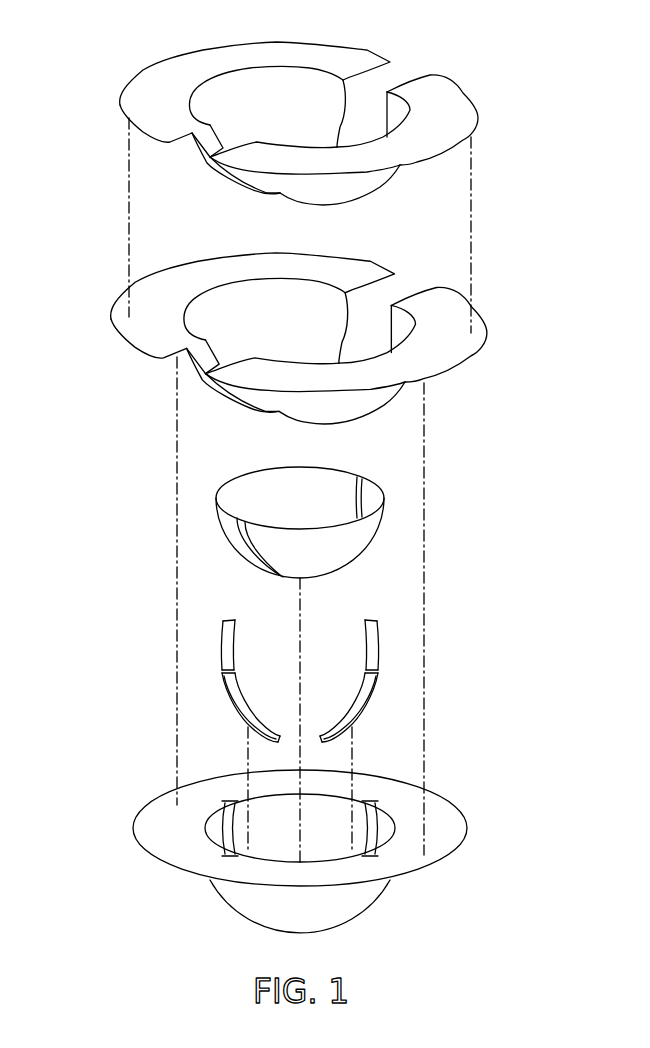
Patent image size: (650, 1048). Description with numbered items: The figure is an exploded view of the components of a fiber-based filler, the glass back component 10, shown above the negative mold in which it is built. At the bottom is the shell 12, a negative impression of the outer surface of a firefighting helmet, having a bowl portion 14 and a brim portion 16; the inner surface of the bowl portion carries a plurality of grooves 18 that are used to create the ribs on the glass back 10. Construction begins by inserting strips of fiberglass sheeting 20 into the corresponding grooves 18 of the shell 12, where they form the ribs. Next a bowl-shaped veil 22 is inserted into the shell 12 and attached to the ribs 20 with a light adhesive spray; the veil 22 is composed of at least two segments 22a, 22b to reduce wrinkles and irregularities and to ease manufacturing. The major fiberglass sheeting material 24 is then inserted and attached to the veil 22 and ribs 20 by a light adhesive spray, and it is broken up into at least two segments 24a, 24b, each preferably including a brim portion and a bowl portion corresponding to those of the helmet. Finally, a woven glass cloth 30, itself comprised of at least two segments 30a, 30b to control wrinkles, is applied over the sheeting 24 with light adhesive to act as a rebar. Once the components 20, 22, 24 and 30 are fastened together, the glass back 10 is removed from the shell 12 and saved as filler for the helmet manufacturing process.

The glass back component 10 is at (70, 42).
The shell 12 is at (155, 822).
The bowl portion 14 is at (248, 915).
The brim portion 16 is at (435, 808).
The grooves 18 is at (225, 803).
The strips of fiberglass sheeting 20 is at (228, 620).
The bowl-shaped veil 22 is at (336, 503).
The veil segment 22a is at (250, 473).
The veil segment 22b is at (382, 469).
The major fiberglass sheeting material 24 is at (352, 320).
The major sheeting segment 24a is at (218, 267).
The major sheeting segment 24b is at (438, 298).
The woven glass cloth 30 is at (353, 112).
The woven glass cloth segment 30a is at (188, 62).
The woven glass cloth segment 30b is at (417, 100).